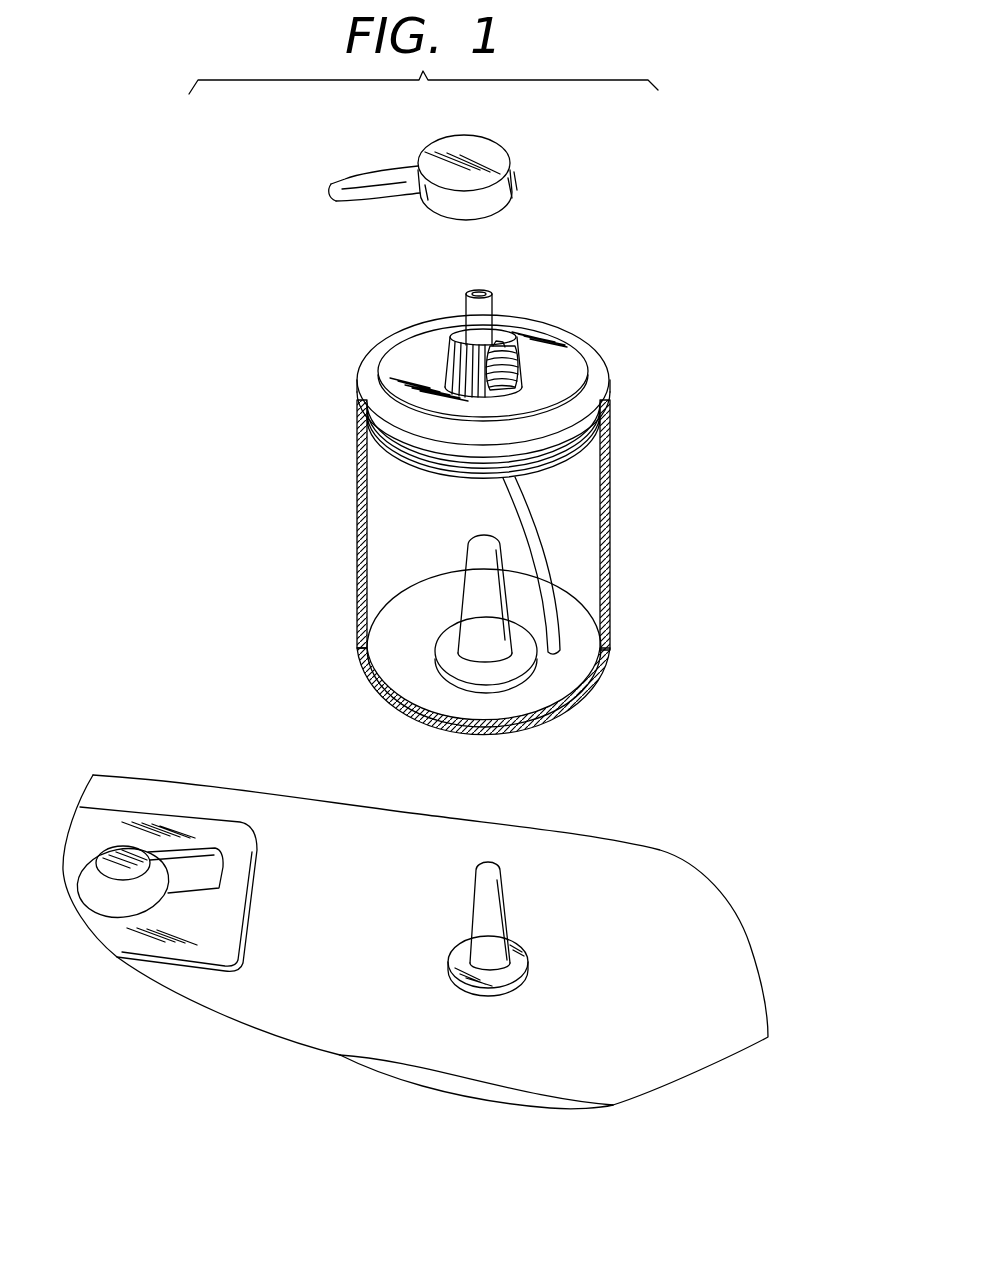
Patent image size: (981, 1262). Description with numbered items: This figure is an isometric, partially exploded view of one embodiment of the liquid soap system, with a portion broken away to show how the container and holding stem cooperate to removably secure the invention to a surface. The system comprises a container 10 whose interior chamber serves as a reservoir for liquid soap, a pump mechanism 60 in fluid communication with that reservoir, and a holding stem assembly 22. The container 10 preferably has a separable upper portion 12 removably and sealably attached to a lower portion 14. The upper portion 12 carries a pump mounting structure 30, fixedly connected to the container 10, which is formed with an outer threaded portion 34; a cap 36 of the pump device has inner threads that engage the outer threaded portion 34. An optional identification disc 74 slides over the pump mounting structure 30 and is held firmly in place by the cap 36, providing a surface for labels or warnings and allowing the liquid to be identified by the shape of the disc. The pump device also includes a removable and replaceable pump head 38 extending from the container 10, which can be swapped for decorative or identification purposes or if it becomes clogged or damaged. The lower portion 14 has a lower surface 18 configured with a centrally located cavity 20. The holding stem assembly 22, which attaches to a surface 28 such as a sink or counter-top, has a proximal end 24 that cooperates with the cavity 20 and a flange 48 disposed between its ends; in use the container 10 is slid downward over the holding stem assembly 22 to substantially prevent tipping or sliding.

The container 10 is at (298, 437).
The upper portion 12 is at (602, 368).
The lower portion 14 is at (613, 485).
The lower surface 18 is at (587, 705).
The cavity 20 is at (463, 560).
The holding stem assembly 22 is at (530, 922).
The proximal end 24 is at (473, 912).
The surface 28 is at (682, 885).
The pump mounting structure 30 is at (520, 338).
The outer threaded portion 34 is at (518, 375).
The cap 36 is at (452, 340).
The pump head 38 is at (510, 155).
The flange 48 is at (521, 968).
The pump mechanism 60 is at (460, 300).
The identification disc 74 is at (553, 330).